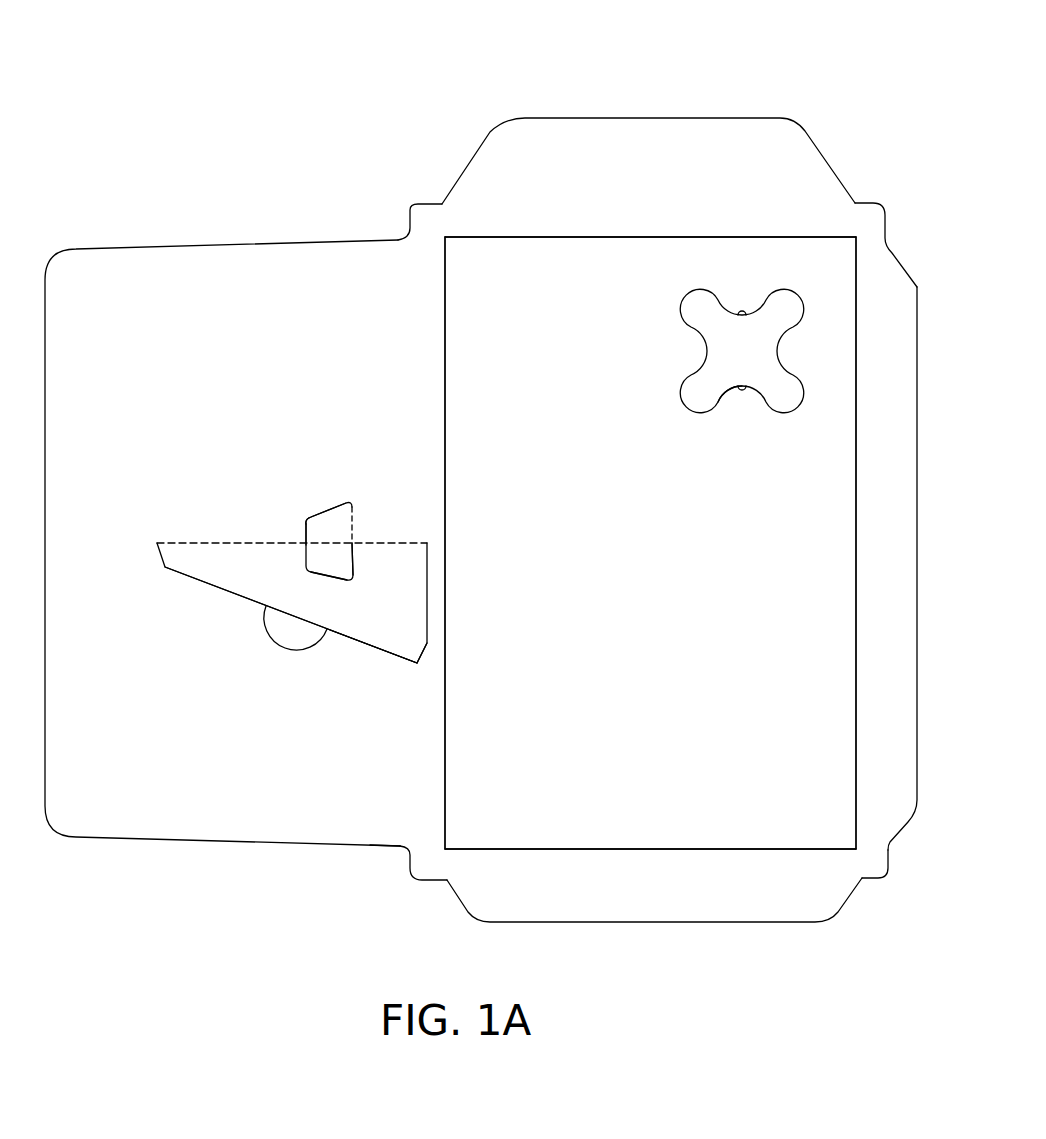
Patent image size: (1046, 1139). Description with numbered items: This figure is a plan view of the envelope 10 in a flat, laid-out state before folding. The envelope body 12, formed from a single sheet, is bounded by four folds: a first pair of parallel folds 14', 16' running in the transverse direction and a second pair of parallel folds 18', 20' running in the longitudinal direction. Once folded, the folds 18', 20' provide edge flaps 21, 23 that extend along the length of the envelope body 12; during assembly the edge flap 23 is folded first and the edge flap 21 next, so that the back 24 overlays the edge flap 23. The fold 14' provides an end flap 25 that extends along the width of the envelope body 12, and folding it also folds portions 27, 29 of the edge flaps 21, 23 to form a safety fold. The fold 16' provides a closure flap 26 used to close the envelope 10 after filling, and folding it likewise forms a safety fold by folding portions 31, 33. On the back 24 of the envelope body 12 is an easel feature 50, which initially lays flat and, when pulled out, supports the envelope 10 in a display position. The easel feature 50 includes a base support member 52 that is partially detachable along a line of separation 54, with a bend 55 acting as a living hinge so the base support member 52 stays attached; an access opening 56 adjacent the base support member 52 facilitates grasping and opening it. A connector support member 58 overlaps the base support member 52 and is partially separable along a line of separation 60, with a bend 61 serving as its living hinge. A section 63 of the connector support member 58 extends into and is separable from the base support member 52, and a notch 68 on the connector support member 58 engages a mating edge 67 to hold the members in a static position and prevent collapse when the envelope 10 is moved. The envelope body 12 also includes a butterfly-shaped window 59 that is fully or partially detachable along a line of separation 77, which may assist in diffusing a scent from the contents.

The envelope 10 is at (272, 98).
The envelope body 12 is at (425, 372).
The fold 14' is at (650, 819).
The fold 16' is at (650, 267).
The fold 18' is at (479, 543).
The fold 20' is at (821, 543).
The edge flap 21 is at (410, 808).
The edge flap 23 is at (900, 607).
The back 24 is at (127, 258).
The end flap 25 is at (650, 922).
The closure flap 26 is at (648, 130).
The portion of edge flap 27 is at (432, 870).
The portion of edge flap 29 is at (867, 870).
The portion of edge flap 31 is at (430, 213).
The portion of edge flap 33 is at (867, 213).
The easel feature 50 is at (193, 660).
The base support member 52 is at (375, 632).
The line of separation 54 is at (228, 592).
The bend 55 is at (200, 542).
The access opening 56 is at (298, 638).
The connector support member 58 is at (335, 523).
The window 59 is at (698, 365).
The line of separation 60 is at (322, 523).
The bend 61 is at (357, 527).
The section 63 is at (357, 562).
The mating edge 67 is at (325, 580).
The notch 68 is at (307, 530).
The line of separation 77 is at (708, 405).